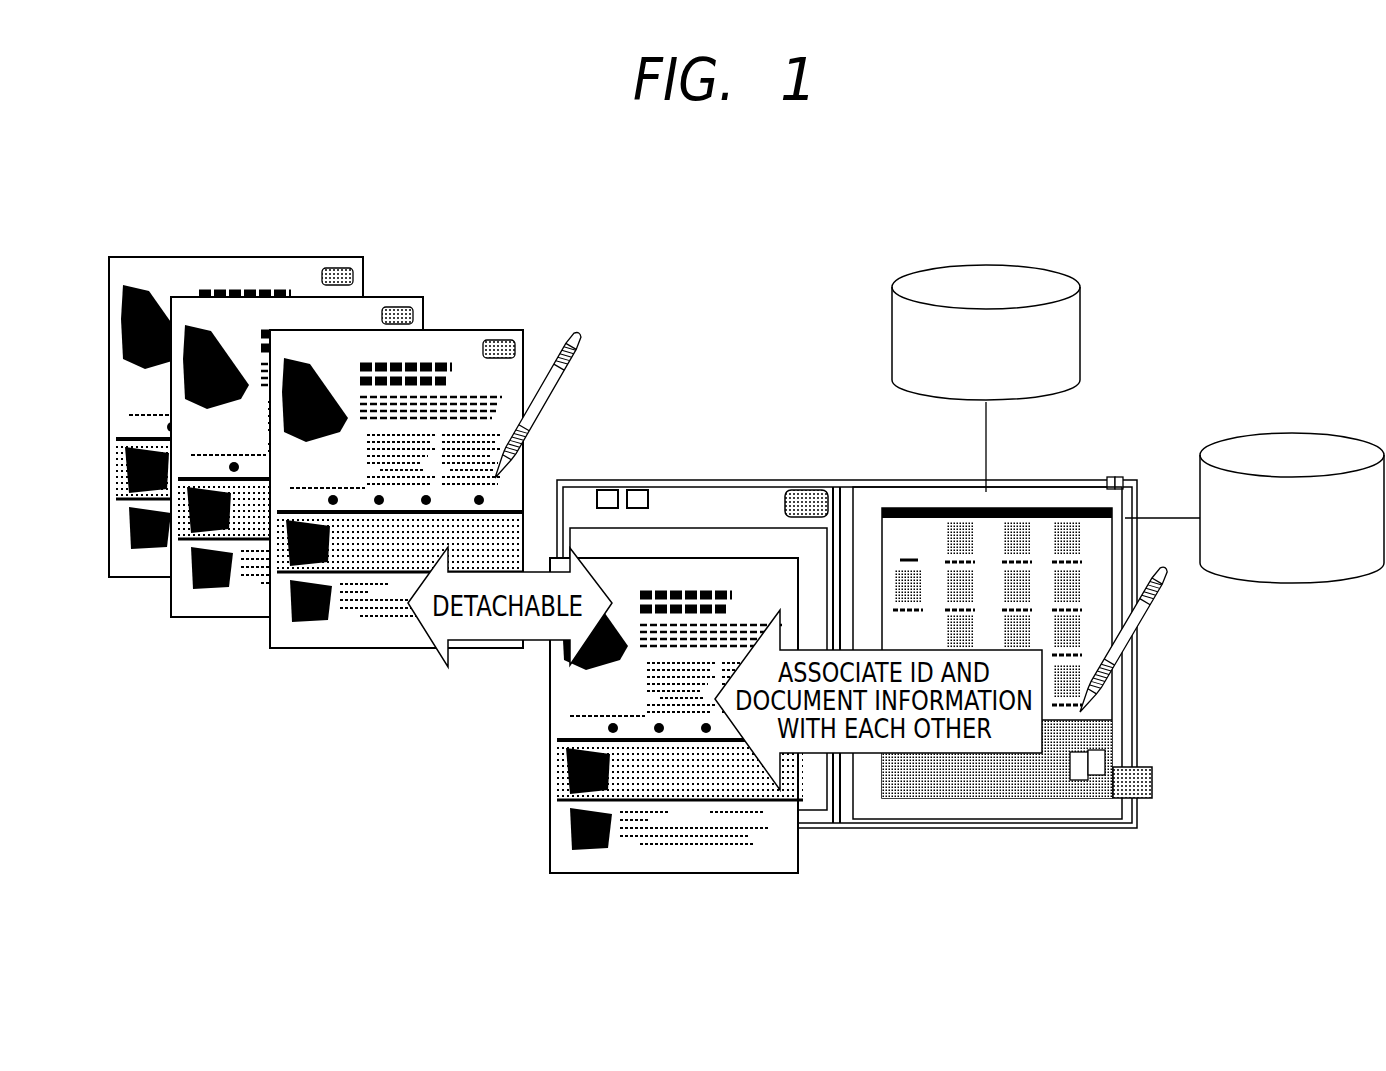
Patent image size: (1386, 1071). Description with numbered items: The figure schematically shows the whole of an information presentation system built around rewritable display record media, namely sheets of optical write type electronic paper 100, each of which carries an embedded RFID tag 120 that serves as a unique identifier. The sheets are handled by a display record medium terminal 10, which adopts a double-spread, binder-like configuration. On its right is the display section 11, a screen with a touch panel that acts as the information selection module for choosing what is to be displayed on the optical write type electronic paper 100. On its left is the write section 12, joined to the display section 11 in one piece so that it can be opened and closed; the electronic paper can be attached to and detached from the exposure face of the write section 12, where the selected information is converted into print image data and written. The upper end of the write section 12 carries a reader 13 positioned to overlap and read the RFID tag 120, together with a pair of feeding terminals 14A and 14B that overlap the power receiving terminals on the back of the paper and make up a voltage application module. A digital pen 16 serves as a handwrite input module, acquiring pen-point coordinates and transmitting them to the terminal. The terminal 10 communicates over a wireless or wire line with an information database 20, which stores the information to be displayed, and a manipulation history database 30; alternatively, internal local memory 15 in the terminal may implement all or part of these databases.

The optical write type electronic paper 100 is at (190, 246).
The RFID tag 120 is at (338, 268).
The display record medium terminal 10 is at (887, 637).
The display section 11 is at (1123, 695).
The write section 12 is at (737, 498).
The reader 13 is at (808, 490).
The feeding terminal 14A is at (600, 490).
The feeding terminal 14B is at (641, 490).
The internal local memory 15 is at (1140, 785).
The digital pen 16 is at (558, 380).
The information database 20 is at (995, 265).
The manipulation history database 30 is at (1307, 433).